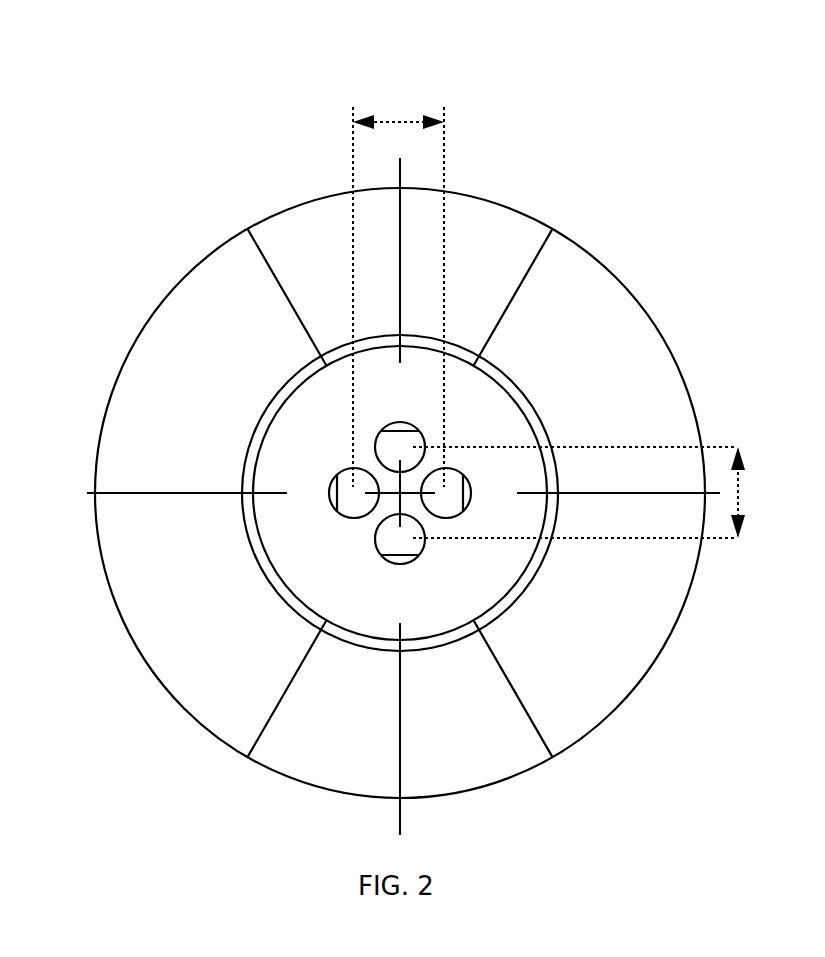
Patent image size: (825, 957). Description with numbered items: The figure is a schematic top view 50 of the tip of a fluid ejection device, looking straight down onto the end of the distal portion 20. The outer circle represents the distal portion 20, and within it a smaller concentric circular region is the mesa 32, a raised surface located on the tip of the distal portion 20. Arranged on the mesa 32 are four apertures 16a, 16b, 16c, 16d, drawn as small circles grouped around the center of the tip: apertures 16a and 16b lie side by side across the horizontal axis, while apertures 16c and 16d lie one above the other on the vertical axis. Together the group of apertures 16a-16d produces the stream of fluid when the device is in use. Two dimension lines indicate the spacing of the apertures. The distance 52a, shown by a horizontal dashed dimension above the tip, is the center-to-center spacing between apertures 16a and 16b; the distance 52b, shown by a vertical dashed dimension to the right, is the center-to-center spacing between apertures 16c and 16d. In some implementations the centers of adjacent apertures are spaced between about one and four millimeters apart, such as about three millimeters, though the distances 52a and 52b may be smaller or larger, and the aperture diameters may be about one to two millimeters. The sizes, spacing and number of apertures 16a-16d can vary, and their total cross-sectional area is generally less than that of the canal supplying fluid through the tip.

The top view 50 is at (120, 72).
The distal portion 20 is at (605, 263).
The mesa 32 is at (497, 365).
The aperture 16a is at (349, 470).
The aperture 16b is at (466, 480).
The aperture 16c is at (389, 423).
The aperture 16d is at (376, 543).
The distance 52a is at (400, 122).
The distance 52b is at (742, 493).